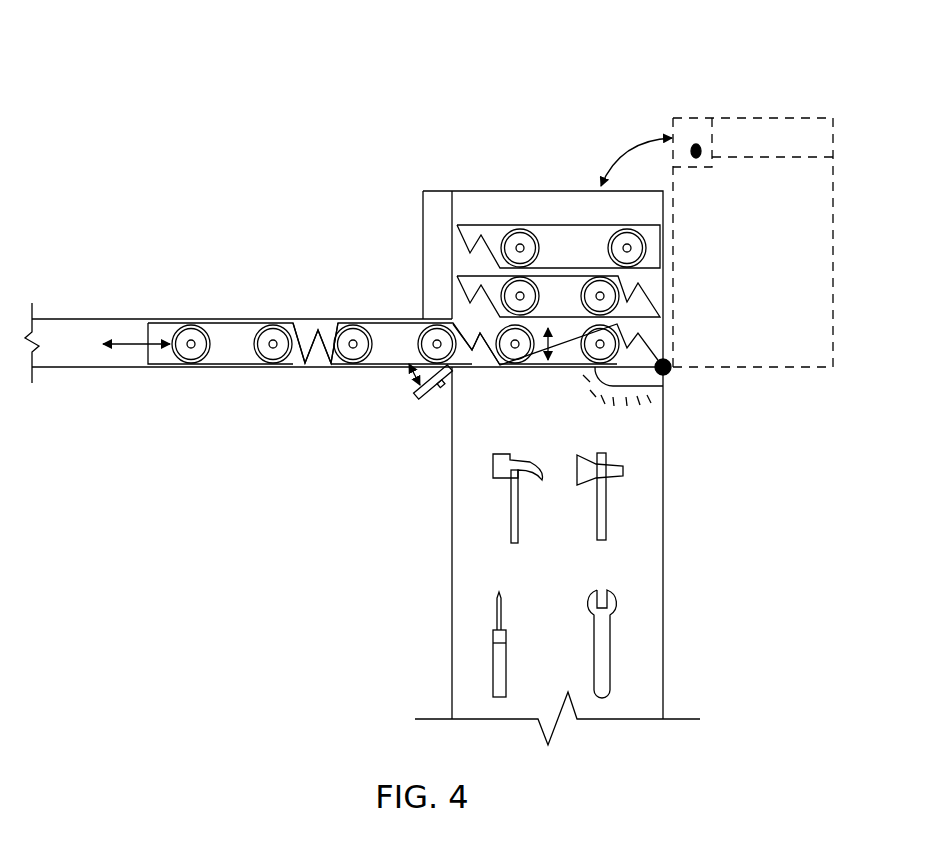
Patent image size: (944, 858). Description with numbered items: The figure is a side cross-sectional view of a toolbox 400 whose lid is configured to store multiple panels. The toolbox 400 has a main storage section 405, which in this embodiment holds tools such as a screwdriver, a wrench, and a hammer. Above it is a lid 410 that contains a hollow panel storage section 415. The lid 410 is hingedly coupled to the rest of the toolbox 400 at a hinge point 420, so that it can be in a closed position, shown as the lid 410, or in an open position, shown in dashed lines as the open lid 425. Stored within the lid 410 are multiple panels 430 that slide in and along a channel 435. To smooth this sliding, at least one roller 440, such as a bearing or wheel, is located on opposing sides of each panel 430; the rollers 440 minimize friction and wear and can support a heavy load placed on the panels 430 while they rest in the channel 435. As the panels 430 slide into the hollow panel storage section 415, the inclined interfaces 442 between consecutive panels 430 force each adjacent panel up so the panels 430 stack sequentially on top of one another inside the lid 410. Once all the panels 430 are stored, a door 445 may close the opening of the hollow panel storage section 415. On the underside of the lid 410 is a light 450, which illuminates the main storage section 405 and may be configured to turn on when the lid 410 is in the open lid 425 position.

The toolbox 400 is at (156, 43).
The main storage section 405 is at (573, 437).
The lid 410 is at (487, 191).
The hollow panel storage section 415 is at (536, 220).
The hinge point 420 is at (668, 372).
The open lid 425 is at (762, 118).
The panels 430 is at (475, 322).
The channel 435 is at (70, 335).
The roller 440 is at (185, 323).
The interfaces 442 is at (327, 323).
The door 445 is at (413, 395).
The light 450 is at (647, 390).